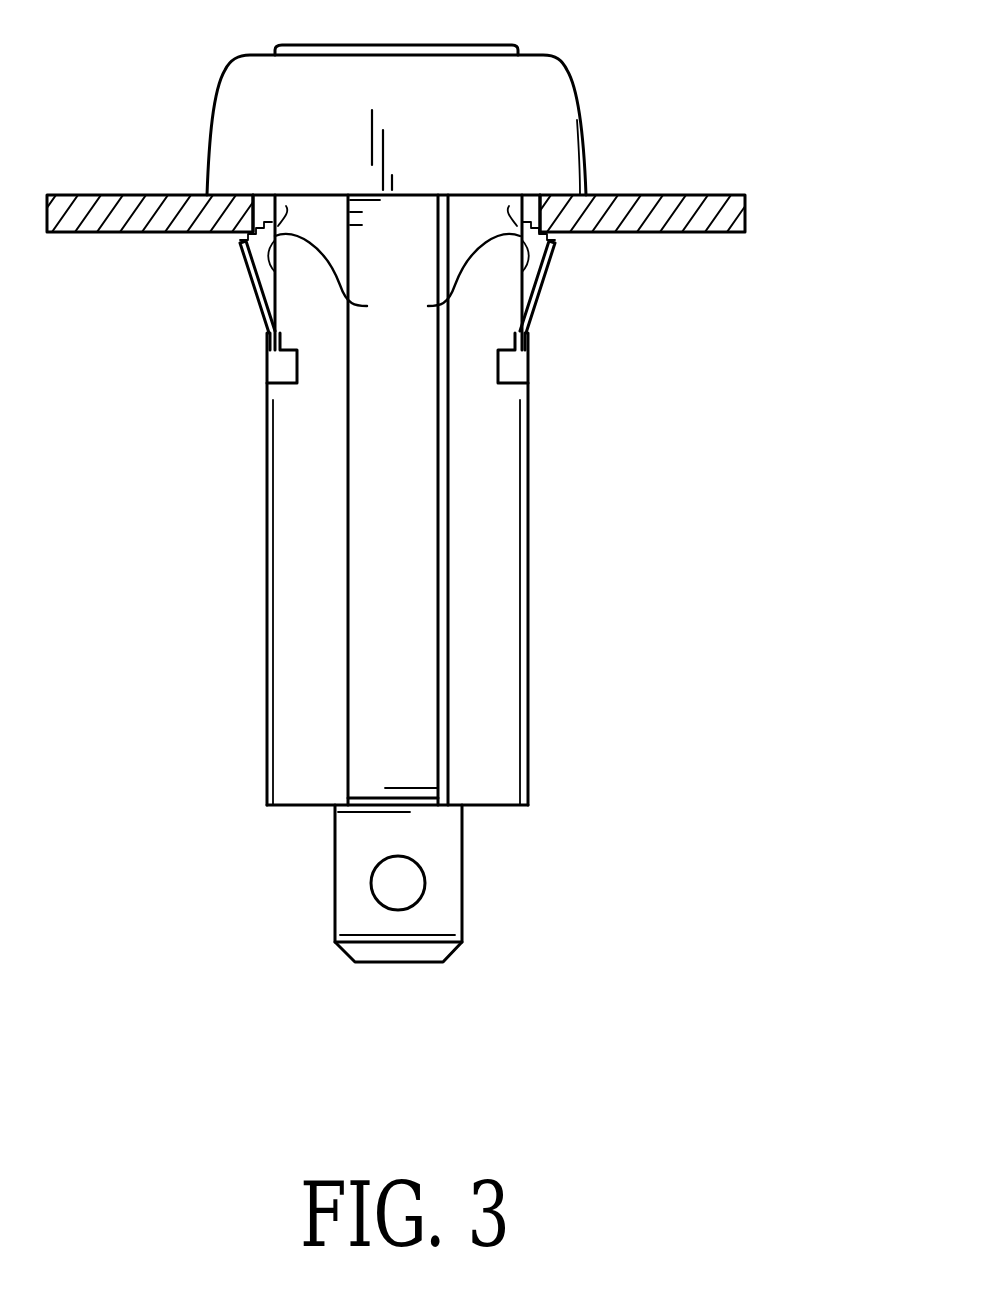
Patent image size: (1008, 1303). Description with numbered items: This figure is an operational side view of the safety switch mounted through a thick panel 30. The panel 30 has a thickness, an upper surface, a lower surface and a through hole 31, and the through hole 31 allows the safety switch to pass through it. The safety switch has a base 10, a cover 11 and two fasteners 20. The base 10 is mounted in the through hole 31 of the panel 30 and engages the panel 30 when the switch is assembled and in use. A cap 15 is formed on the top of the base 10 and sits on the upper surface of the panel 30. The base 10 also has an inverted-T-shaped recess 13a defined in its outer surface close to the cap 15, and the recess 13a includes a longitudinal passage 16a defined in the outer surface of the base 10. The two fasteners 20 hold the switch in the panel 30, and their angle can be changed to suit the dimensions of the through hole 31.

The base 10 is at (500, 660).
The cover 11 is at (290, 650).
The recess 13a is at (520, 288).
The cap 15 is at (497, 103).
The longitudinal passage 16a is at (513, 373).
The fastener 20 is at (745, 265).
The panel 30 is at (728, 195).
The through hole 31 is at (536, 194).